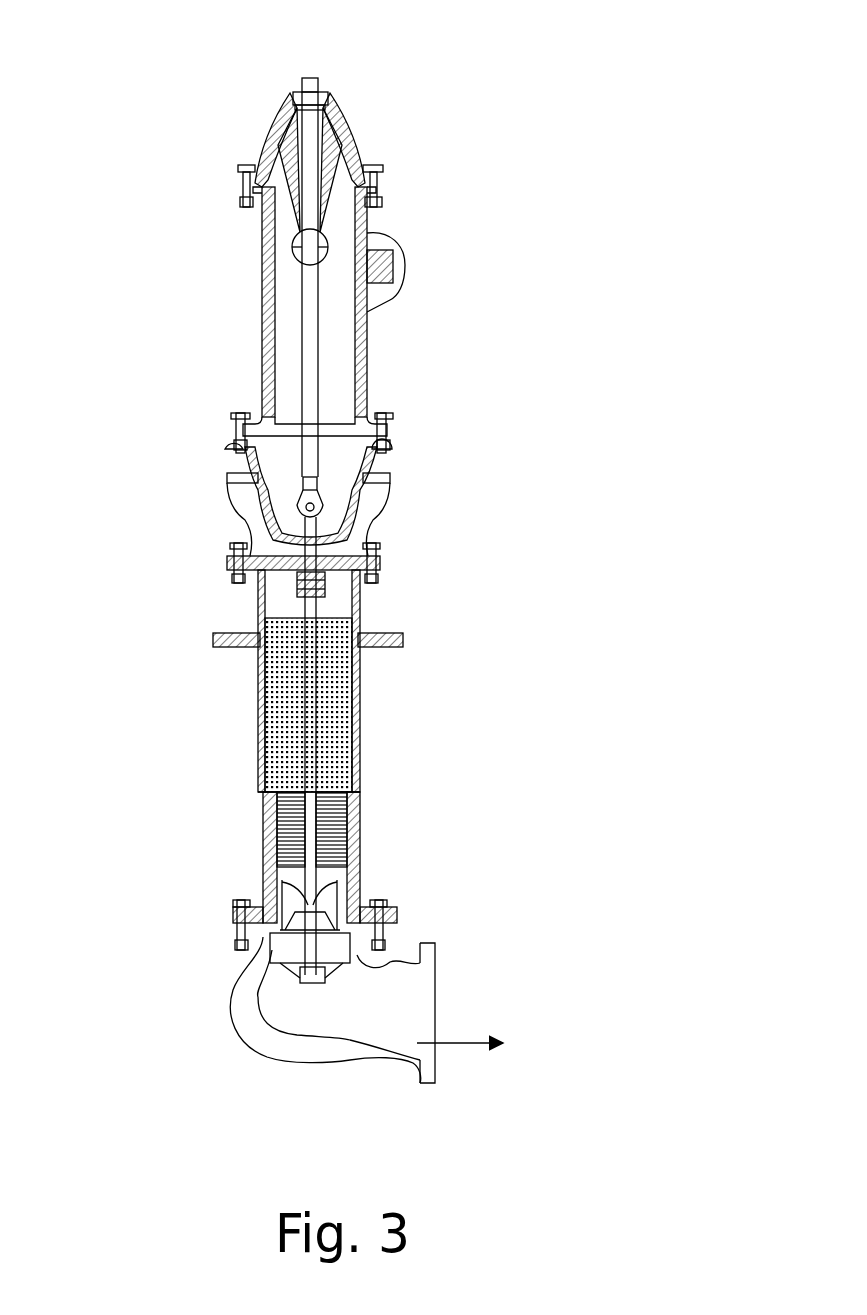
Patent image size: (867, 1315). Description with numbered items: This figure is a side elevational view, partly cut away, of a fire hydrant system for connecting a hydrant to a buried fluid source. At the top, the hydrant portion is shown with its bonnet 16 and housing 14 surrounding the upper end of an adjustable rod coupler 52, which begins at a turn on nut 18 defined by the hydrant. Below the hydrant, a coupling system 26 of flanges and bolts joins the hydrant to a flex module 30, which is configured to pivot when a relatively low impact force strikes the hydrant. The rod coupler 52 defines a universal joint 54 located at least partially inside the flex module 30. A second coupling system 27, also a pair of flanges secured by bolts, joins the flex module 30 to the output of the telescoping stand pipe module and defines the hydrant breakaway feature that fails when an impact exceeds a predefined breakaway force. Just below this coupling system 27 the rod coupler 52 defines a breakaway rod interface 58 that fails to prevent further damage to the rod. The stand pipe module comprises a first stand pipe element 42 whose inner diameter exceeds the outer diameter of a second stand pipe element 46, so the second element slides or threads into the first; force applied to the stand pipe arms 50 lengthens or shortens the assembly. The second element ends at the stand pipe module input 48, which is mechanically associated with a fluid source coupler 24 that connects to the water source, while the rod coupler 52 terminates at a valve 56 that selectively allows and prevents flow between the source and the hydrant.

The housing tube 14 is at (368, 353).
The bonnet 16 is at (262, 123).
The turn on nut 18 is at (318, 87).
The fluid source coupler 24 is at (233, 1007).
The coupling system 26 is at (232, 428).
The coupling system 27 is at (396, 563).
The flex module 30 is at (238, 510).
The first stand pipe element 42 is at (262, 715).
The second stand pipe element 46 is at (357, 833).
The stand pipe module input 48 is at (233, 917).
The stand pipe arms 50 is at (213, 640).
The adjustable rod coupler 52 is at (307, 308).
The universal joint 54 is at (313, 502).
The valve 56 is at (342, 977).
The breakaway rod interface 58 is at (336, 588).